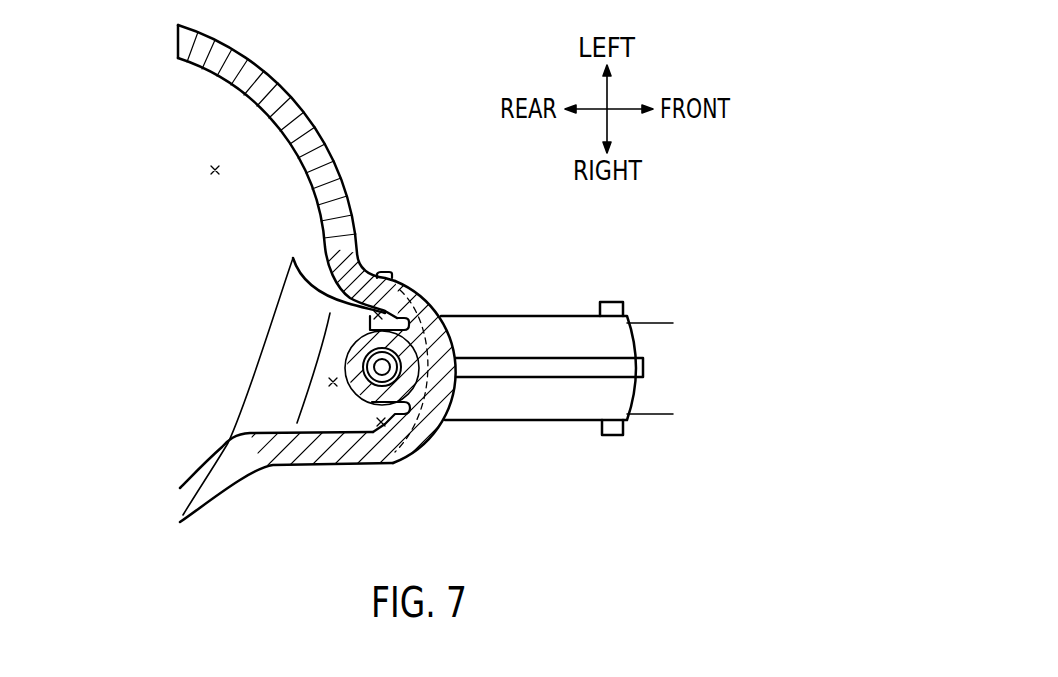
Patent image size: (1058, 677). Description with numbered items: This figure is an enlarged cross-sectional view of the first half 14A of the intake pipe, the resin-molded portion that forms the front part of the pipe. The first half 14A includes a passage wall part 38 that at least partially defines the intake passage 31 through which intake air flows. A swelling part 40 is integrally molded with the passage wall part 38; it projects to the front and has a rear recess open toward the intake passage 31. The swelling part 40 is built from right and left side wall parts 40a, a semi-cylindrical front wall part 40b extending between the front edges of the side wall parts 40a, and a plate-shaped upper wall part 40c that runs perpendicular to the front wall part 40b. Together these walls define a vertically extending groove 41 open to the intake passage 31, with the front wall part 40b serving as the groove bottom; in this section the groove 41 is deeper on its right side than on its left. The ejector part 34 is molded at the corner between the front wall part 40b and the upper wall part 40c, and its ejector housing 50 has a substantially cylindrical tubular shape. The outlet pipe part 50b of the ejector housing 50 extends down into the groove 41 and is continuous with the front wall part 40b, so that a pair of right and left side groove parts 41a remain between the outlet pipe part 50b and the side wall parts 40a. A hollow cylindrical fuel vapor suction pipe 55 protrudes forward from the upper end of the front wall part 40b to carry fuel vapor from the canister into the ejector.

The first half 14A is at (299, 84).
The passage wall part 38 is at (330, 192).
The intake passage 31 is at (212, 170).
The ejector part 34 is at (474, 281).
The swelling part 40 is at (428, 443).
The side wall parts 40a is at (410, 293).
The front wall part 40b is at (451, 399).
The upper wall part 40c is at (327, 417).
The groove 41 is at (328, 382).
The side groove parts 41a is at (379, 311).
The ejector housing 50 is at (344, 366).
The outlet pipe part 50b is at (359, 352).
The fuel vapor suction pipe 55 is at (558, 332).